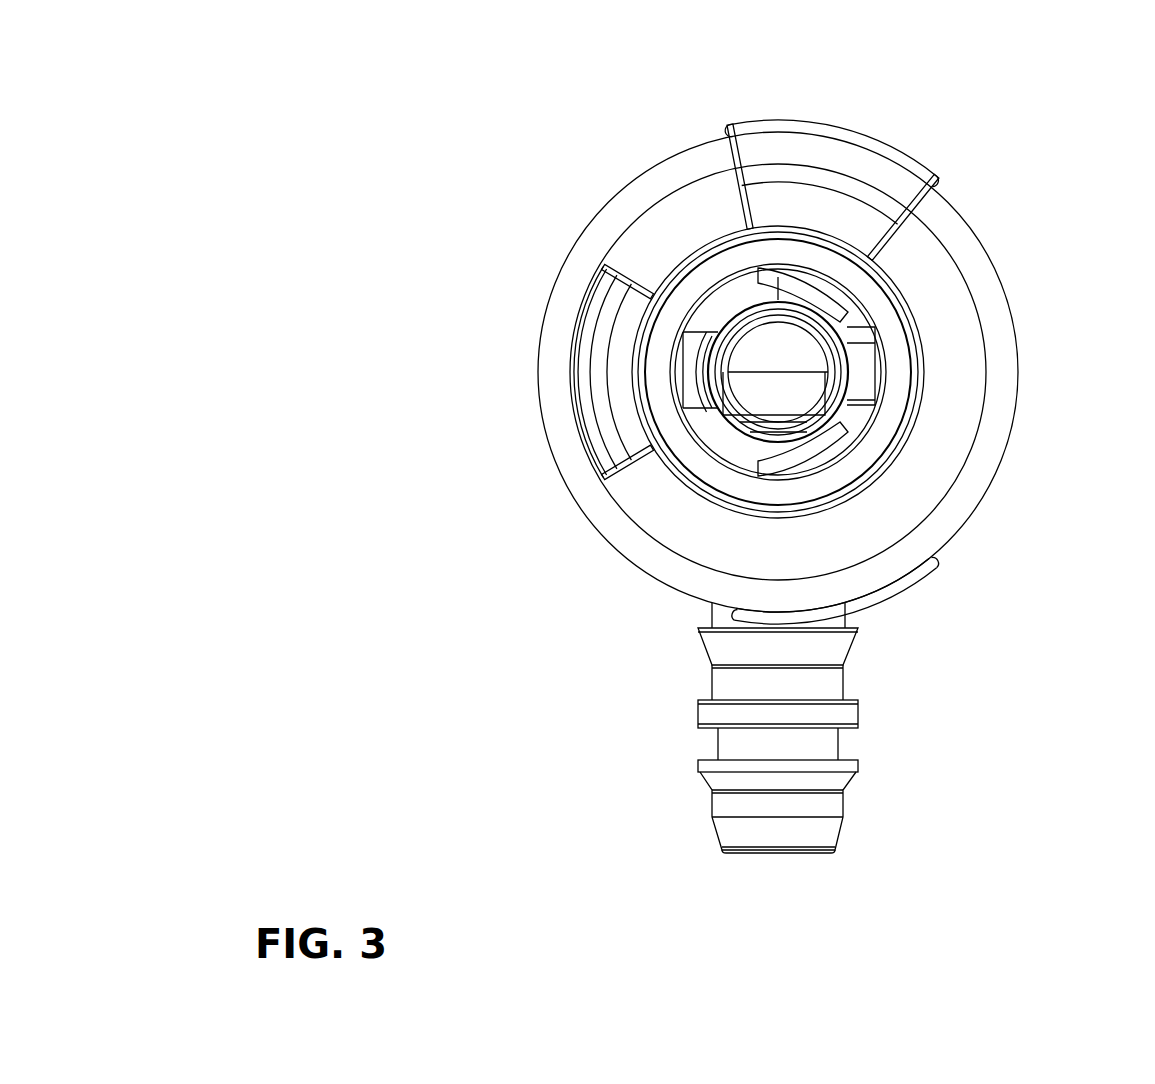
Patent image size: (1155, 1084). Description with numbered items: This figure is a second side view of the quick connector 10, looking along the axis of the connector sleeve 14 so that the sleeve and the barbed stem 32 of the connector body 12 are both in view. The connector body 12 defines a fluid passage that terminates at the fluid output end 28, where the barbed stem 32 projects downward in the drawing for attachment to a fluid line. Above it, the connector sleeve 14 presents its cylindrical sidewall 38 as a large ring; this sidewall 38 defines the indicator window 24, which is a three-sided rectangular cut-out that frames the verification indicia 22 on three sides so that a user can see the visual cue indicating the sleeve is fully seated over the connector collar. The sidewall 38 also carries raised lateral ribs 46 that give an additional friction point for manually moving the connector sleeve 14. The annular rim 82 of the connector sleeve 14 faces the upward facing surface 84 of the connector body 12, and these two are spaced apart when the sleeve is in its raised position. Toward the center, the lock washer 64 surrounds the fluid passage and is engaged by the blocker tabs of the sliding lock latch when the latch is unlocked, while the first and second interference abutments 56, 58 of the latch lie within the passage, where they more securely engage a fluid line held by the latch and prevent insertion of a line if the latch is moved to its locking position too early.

The quick connector 10 is at (1037, 174).
The connector body 12 is at (612, 383).
The connector sleeve 14 is at (640, 166).
The verification indicia 22 is at (840, 177).
The indicator window 24 is at (757, 153).
The fluid output end 28 is at (787, 855).
The barbed stem 32 is at (853, 648).
The cylindrical sidewall 38 is at (1010, 442).
The lateral ribs 46 is at (923, 167).
The first interference abutment 56 is at (840, 305).
The second interference abutment 58 is at (838, 440).
The lock washer 64 is at (695, 468).
The annular rim 82 is at (952, 372).
The upward facing surface 84 is at (612, 433).